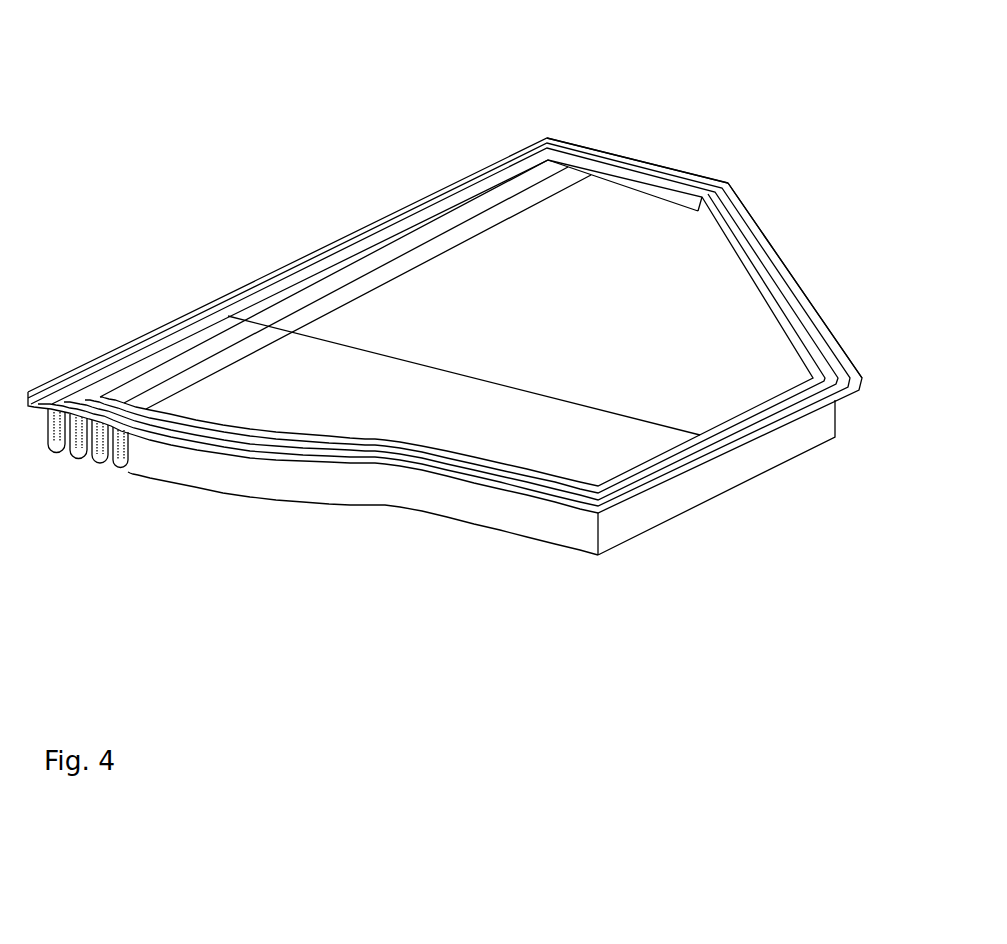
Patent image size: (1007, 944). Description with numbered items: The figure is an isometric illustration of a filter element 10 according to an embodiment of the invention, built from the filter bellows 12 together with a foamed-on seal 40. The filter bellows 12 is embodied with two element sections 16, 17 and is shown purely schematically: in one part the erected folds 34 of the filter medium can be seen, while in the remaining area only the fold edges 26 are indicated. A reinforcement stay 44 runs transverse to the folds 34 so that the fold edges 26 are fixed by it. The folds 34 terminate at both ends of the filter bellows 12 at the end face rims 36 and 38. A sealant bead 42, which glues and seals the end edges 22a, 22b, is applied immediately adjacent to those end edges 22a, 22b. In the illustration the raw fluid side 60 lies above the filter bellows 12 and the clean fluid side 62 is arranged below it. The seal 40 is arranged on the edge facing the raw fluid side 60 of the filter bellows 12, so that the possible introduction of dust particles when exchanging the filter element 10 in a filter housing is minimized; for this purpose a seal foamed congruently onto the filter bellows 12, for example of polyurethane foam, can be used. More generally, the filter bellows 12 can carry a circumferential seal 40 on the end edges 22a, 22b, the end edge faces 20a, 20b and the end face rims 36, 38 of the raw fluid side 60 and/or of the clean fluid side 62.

The filter element 10 is at (400, 106).
The filter bellows 12 is at (563, 240).
The element section 16 is at (265, 384).
The element section 17 is at (526, 432).
The end edge face 20a is at (767, 219).
The end edge face 20b is at (262, 478).
The end edge 22a is at (606, 135).
The end edge 22b is at (95, 473).
The fold edges 26 is at (340, 272).
The folds 34 is at (395, 248).
The end face rim 36 is at (703, 490).
The end face rim 38 is at (295, 250).
The seal 40 is at (177, 318).
The sealant bead 42 is at (380, 483).
The reinforcement stay 44 is at (630, 403).
The raw fluid side 60 is at (464, 330).
The clean fluid side 62 is at (588, 560).